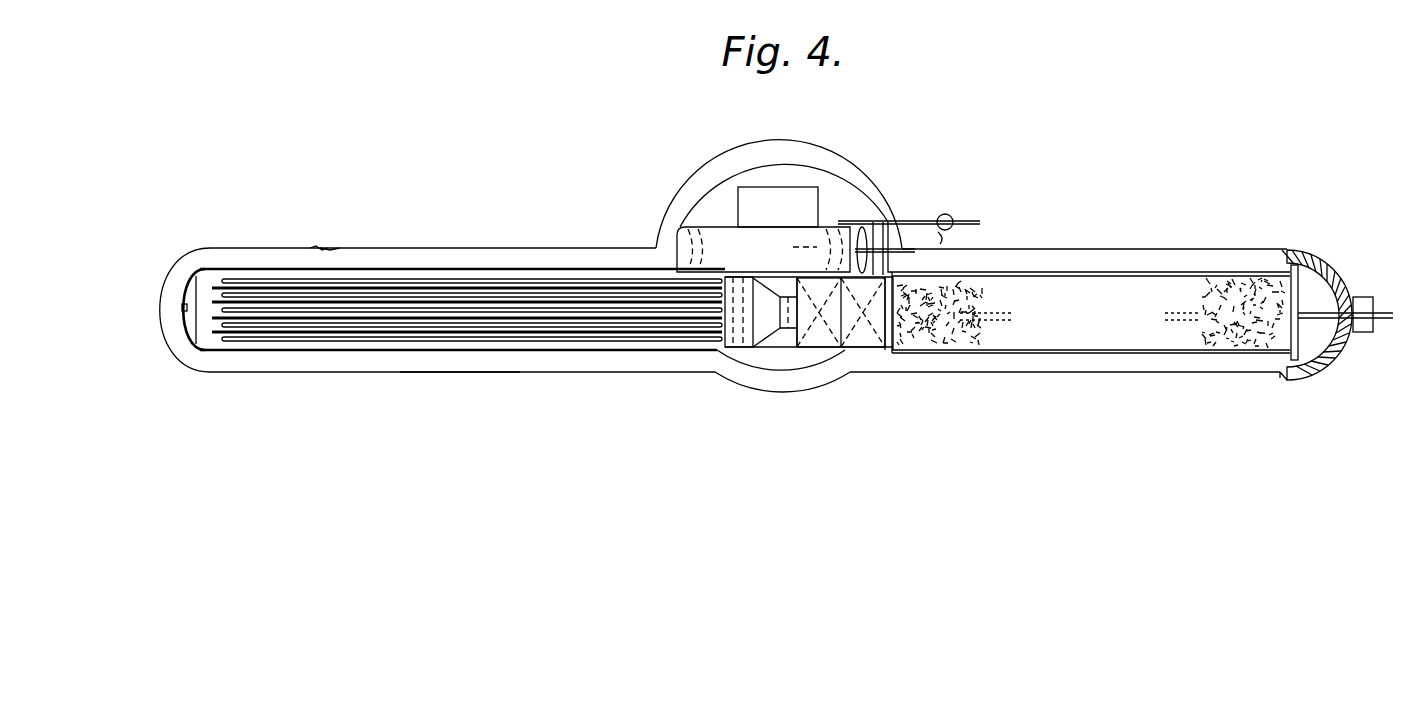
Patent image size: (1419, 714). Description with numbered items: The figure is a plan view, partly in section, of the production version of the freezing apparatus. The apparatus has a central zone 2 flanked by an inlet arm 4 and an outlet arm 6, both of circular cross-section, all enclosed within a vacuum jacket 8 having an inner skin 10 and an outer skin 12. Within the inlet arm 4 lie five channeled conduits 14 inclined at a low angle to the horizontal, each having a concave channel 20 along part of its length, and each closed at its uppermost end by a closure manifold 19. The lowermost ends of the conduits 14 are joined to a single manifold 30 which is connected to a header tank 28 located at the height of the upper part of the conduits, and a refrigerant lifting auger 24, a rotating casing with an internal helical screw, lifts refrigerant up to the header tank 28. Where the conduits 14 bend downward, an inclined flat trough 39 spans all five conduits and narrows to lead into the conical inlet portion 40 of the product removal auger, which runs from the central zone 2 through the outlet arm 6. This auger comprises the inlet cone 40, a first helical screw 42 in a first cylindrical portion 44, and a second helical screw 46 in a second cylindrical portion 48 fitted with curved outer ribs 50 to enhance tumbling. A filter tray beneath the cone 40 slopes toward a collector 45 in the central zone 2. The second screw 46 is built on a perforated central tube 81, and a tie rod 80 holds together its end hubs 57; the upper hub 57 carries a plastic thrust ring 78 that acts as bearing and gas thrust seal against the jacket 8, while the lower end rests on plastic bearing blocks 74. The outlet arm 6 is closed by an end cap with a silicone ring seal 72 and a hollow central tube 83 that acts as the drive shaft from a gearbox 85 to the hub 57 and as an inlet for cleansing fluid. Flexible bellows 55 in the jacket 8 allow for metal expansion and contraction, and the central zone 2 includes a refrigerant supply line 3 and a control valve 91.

The central zone 2 is at (721, 200).
The supply line 3 is at (945, 244).
The inlet arm 4 is at (250, 248).
The outlet arm 6 is at (1117, 249).
The vacuum jacket 8 is at (373, 258).
The inner skin 10 is at (372, 352).
The outer skin 12 is at (462, 372).
The channeled conduit 14 is at (588, 290).
The closure manifold 19 is at (208, 268).
The concave channel 20 is at (511, 290).
The refrigerant lifting auger 24 is at (846, 218).
The header tank 28 is at (884, 208).
The manifold 30 is at (740, 350).
The inclined flat trough 39 is at (765, 322).
The conical inlet portion 40 is at (788, 338).
The first helical screw 42 is at (827, 353).
The first cylindrical portion 44 is at (857, 353).
The collector 45 is at (755, 200).
The second helical screw 46 is at (1240, 352).
The second cylindrical portion 48 is at (1010, 272).
The curved outer ribs 50 is at (945, 356).
The flexible bellows 55 is at (316, 247).
The end hub 57 is at (888, 352).
The silicone ring seal 72 is at (1282, 377).
The plastic bearing block 74 is at (893, 212).
The plastic thrust ring 78 is at (1298, 265).
The tie rod 80 is at (1172, 356).
The perforated central tube 81 is at (1199, 355).
The hollow central tube 83 is at (1380, 300).
The gearbox 85 is at (1344, 335).
The control valve 91 is at (958, 217).